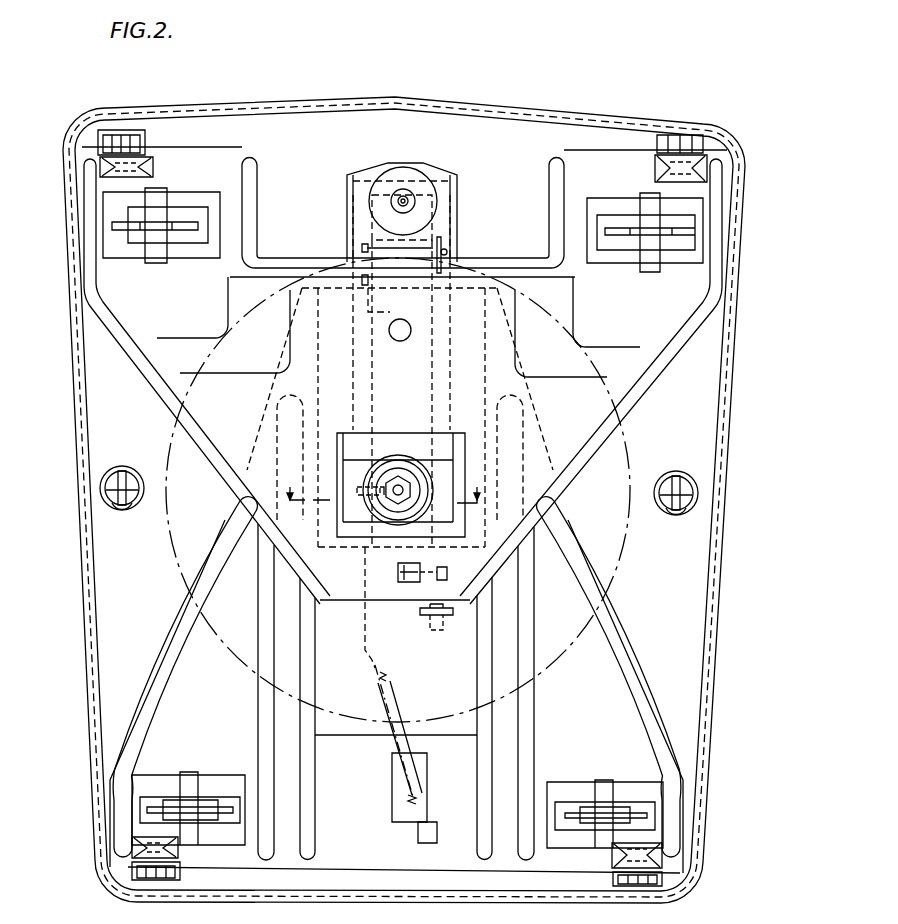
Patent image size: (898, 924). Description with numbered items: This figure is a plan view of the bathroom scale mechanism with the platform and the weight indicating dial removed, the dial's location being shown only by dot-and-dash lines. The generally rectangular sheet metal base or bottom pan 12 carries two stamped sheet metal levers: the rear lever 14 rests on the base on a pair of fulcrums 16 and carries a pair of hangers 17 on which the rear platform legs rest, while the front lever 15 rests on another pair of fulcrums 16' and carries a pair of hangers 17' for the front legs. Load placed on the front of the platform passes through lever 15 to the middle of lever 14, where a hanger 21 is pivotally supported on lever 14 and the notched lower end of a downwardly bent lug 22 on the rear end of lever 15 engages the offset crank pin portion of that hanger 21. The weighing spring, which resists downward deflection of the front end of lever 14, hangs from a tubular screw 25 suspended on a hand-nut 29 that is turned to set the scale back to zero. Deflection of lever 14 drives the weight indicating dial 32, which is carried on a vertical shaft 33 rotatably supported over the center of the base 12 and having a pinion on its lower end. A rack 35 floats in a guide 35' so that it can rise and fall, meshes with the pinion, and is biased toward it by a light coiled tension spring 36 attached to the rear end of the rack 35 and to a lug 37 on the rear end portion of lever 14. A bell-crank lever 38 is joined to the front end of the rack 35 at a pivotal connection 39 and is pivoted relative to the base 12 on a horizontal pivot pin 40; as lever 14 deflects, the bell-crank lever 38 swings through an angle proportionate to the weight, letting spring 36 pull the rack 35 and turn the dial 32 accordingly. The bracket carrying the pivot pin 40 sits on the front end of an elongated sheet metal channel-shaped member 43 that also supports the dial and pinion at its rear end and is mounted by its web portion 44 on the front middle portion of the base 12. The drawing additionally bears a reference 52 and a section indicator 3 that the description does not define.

The base or bottom pan 12 is at (98, 648).
The lever 14 is at (187, 658).
The lever 15 is at (176, 357).
The fulcrums 16 is at (395, 879).
The fulcrums 16' is at (415, 129).
The hangers 17 is at (397, 797).
The hangers 17' is at (403, 219).
The hanger 21 is at (409, 582).
The lug 22 is at (423, 567).
The tubular screw 25 is at (406, 197).
The hand-nut 29 is at (437, 206).
The weight indicating dial 32 is at (630, 447).
The vertical shaft 33 is at (403, 482).
The rack 35 is at (400, 478).
The guide 35' is at (347, 478).
The coiled tension spring 36 is at (415, 793).
The lug 37 is at (422, 824).
The bell-crank lever 38 is at (385, 285).
The pivotal connection 39 is at (362, 282).
The pivot pin 40 is at (362, 248).
The channel-shaped member 43 is at (455, 458).
The web portion 44 is at (367, 173).
The pulley 52 is at (391, 202).
The section line 3 is at (382, 482).